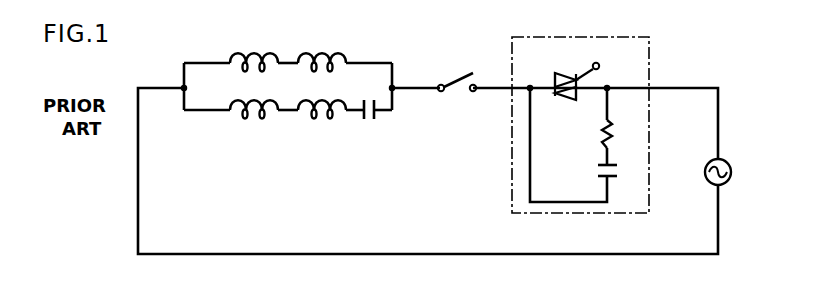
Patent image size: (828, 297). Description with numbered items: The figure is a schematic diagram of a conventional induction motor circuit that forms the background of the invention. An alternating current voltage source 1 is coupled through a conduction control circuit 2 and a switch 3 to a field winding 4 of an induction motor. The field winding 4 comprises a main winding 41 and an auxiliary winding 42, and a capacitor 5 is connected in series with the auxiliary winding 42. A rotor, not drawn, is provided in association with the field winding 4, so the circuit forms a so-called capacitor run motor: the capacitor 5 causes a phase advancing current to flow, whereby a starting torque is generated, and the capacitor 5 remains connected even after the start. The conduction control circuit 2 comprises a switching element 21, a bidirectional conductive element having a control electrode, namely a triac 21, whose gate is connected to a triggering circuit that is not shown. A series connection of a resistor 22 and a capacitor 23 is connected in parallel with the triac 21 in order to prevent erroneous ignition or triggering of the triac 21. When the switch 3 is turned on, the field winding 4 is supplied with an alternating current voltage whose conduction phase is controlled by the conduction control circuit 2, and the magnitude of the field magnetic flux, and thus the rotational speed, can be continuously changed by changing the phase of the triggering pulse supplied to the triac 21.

The alternating current voltage source 1 is at (711, 185).
The conduction control circuit 2 is at (541, 126).
The switch 3 is at (458, 91).
The field winding 4 is at (299, 89).
The main winding 41 is at (271, 52).
The auxiliary winding 42 is at (312, 118).
The capacitor 5 is at (371, 124).
The triac 21 is at (558, 98).
The resistor 22 is at (603, 137).
The capacitor 23 is at (603, 178).